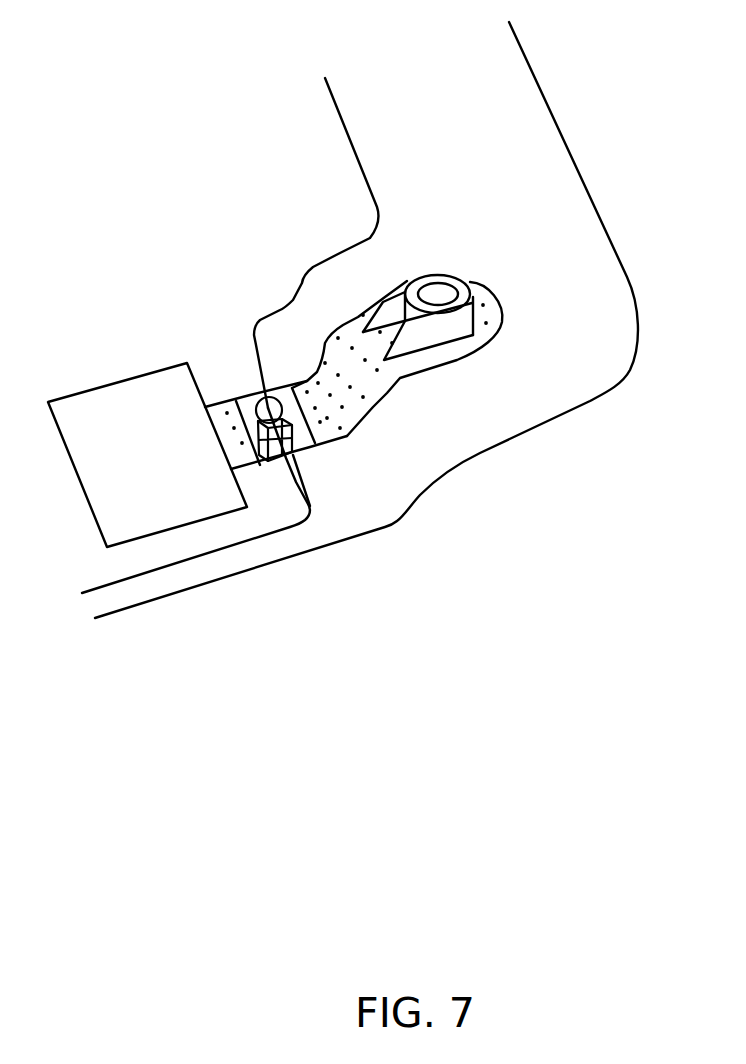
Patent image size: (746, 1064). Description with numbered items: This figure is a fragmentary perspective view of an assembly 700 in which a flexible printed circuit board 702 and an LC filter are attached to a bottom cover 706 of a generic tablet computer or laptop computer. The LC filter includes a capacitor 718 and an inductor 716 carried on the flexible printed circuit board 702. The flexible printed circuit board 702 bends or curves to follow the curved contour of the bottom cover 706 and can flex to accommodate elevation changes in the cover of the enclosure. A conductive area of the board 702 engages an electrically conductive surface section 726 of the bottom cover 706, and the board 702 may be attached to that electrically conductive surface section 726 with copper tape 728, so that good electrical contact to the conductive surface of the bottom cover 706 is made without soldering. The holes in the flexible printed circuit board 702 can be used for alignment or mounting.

The electronic device assembly 700 is at (356, 503).
The flexible printed circuit board 702 is at (340, 430).
The bottom cover 706 is at (512, 123).
The inductor 716 is at (262, 400).
The capacitor 718 is at (310, 510).
The electrically conductive surface section 726 is at (80, 357).
The copper tape 728 is at (172, 488).